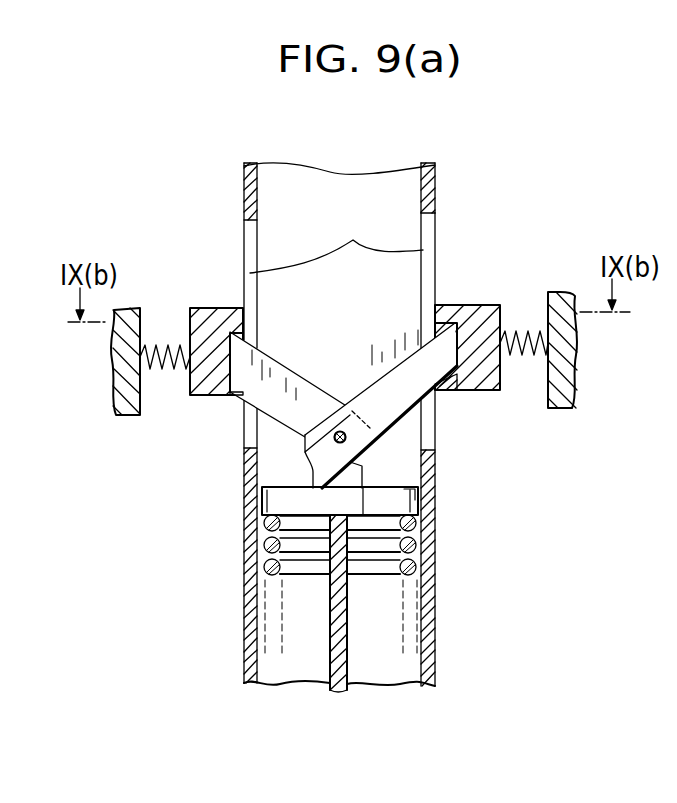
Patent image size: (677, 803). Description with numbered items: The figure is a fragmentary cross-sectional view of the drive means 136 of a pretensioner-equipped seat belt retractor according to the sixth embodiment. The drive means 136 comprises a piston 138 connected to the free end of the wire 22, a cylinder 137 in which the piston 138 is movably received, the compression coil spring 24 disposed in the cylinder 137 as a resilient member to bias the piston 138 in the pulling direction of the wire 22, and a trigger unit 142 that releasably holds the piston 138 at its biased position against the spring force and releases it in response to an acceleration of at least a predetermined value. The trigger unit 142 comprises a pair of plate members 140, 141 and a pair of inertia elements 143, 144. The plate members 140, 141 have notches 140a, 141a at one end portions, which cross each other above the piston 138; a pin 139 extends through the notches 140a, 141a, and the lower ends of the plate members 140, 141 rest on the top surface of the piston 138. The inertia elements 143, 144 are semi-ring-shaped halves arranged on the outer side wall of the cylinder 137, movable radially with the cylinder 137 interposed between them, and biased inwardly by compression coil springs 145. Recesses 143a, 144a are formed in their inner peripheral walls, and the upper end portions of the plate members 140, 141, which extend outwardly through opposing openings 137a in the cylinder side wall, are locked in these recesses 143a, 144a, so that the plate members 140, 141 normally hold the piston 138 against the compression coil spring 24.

The wire 22 is at (338, 688).
The compression coil spring 24 is at (383, 578).
The drive means 136 is at (213, 505).
The cylinder 137 is at (248, 650).
The openings 137a is at (353, 241).
The piston 138 is at (408, 490).
The pin 139 is at (342, 431).
The plate member 140 is at (287, 398).
The notch 140a is at (365, 456).
The plate member 141 is at (428, 405).
The notch 141a is at (308, 455).
The trigger unit 142 is at (466, 257).
The inertia element 143 is at (213, 309).
The recess 143a is at (237, 397).
The inertia element 144 is at (494, 308).
The recess 144a is at (443, 387).
The compression coil springs 145 is at (165, 378).